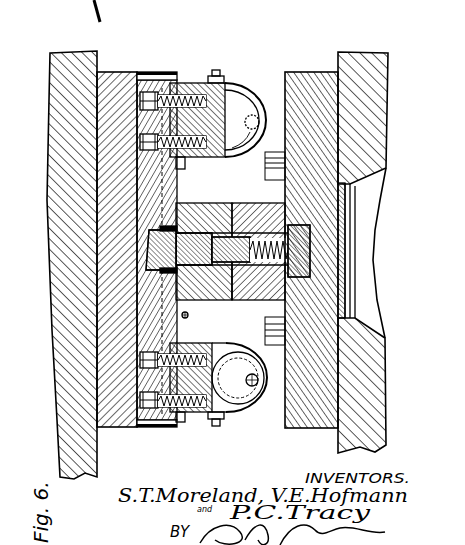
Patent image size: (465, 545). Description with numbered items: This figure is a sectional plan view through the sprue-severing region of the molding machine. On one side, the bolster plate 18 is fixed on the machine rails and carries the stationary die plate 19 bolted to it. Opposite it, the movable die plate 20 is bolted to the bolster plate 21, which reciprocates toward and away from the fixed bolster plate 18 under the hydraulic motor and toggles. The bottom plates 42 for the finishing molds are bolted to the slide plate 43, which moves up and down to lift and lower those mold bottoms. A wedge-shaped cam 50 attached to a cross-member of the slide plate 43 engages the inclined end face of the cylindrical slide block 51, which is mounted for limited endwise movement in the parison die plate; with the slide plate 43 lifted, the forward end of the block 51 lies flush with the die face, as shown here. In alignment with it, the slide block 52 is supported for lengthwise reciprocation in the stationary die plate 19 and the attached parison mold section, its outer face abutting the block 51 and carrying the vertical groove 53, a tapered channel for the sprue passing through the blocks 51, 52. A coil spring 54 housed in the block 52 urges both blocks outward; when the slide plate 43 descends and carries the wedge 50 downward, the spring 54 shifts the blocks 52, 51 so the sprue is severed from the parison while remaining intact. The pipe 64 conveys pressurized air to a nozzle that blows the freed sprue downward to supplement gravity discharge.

The bolster plate 18 is at (360, 78).
The stationary die plate 19 is at (295, 72).
The movable die plate 20 is at (105, 307).
The bolster plate 21 is at (67, 343).
The bottom plates 42 is at (237, 87).
The slide plate 43 is at (152, 415).
The wedge-shaped cam 50 is at (157, 268).
The cylindrical slide block 51 is at (180, 253).
The slide block 52 is at (238, 266).
The vertical groove 53 is at (233, 250).
The coil spring 54 is at (262, 240).
The pipe 64 is at (188, 316).